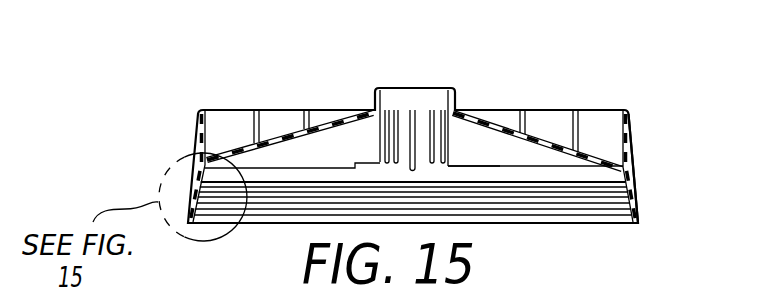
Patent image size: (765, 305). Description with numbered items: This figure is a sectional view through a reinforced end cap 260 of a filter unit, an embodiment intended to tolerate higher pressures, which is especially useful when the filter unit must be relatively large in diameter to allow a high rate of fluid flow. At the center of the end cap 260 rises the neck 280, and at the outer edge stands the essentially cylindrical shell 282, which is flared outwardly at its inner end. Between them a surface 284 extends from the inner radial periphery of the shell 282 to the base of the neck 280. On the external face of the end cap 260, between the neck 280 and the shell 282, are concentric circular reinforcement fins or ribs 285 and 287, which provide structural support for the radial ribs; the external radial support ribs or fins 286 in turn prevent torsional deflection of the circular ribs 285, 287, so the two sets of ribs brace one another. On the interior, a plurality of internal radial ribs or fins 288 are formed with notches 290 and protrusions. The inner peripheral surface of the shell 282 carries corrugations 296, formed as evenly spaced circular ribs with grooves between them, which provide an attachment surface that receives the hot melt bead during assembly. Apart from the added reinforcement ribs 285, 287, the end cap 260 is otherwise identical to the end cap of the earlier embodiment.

The end cap 260 is at (680, 81).
The neck 280 is at (458, 98).
The shell 282 is at (632, 141).
The surface 284 is at (593, 152).
The reinforcement rib 285 is at (250, 127).
The external radial support rib 286 is at (538, 113).
The reinforcement rib 287 is at (303, 120).
The internal radial rib 288 is at (346, 141).
The notch 290 is at (481, 158).
The corrugations 296 is at (615, 224).